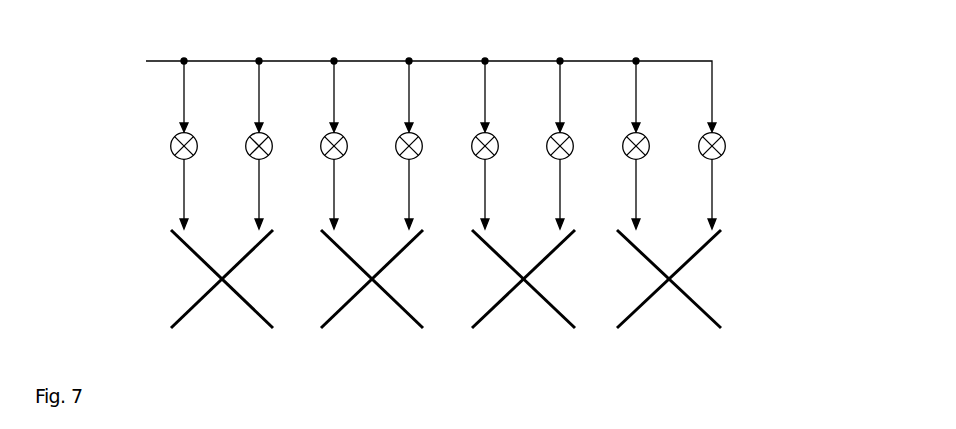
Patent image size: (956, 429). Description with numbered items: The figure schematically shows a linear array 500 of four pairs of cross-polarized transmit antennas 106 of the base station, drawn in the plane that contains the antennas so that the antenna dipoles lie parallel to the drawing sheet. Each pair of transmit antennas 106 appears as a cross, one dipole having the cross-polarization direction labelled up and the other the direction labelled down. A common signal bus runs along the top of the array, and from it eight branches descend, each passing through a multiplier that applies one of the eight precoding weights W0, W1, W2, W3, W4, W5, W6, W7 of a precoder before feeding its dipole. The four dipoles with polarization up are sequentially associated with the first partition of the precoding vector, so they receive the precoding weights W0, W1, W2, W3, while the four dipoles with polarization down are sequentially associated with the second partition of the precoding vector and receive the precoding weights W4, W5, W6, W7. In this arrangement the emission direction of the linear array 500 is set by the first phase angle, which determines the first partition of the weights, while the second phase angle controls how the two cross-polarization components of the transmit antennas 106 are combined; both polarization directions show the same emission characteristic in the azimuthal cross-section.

The linear array 500 is at (68, 38).
The transmit antennas 106 is at (729, 278).
The precoding weight w0 W0 is at (162, 146).
The precoding weight w1 W1 is at (312, 146).
The precoding weight w2 W2 is at (463, 146).
The precoding weight w3 W3 is at (614, 146).
The precoding weight w4 W4 is at (237, 146).
The precoding weight w5 W5 is at (387, 146).
The precoding weight w6 W6 is at (538, 146).
The precoding weight w7 W7 is at (690, 146).